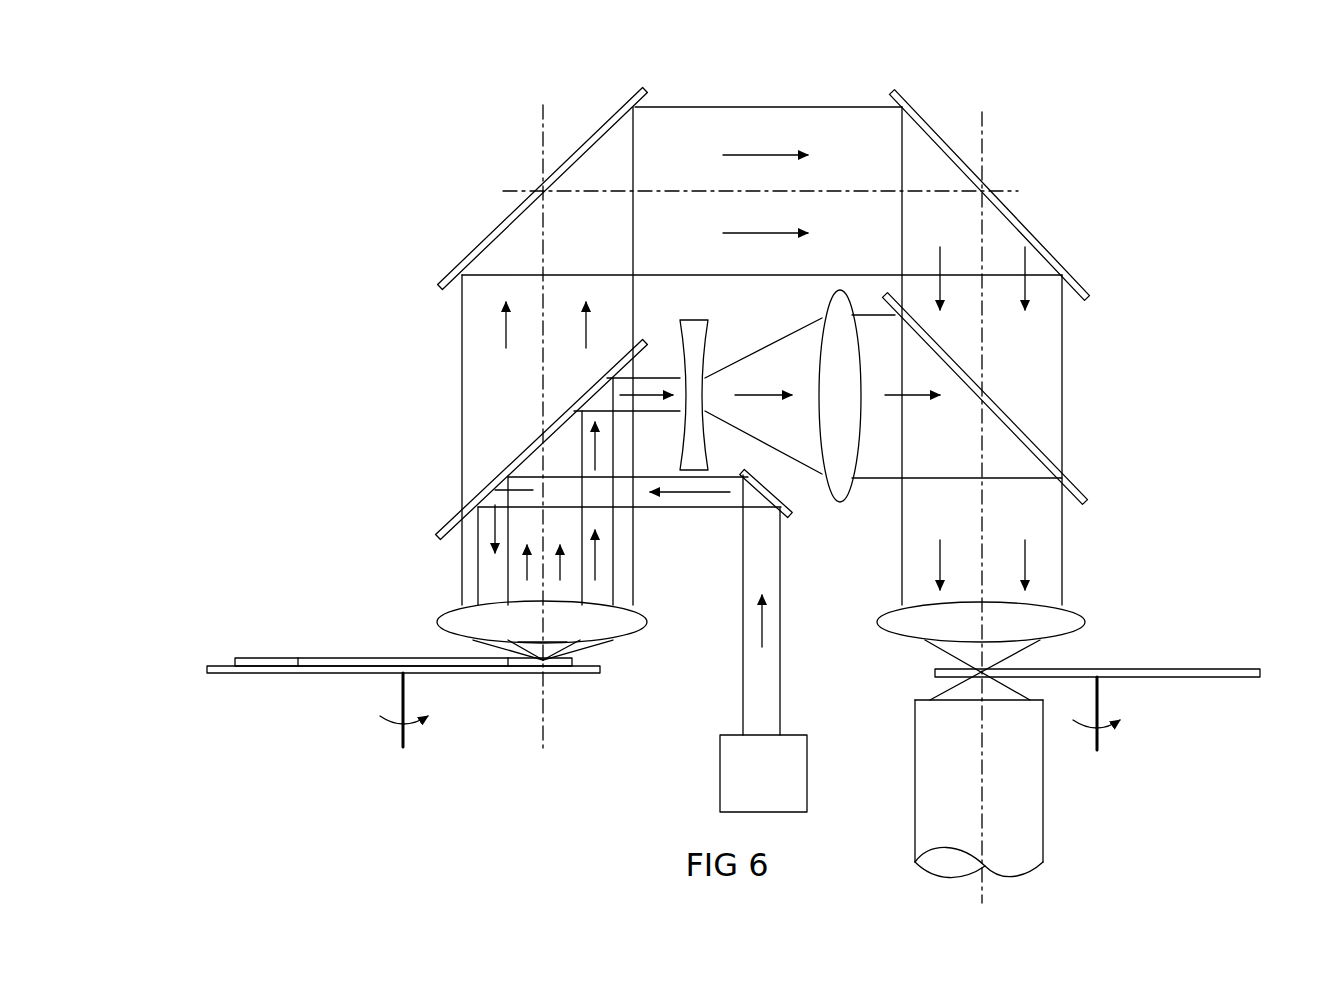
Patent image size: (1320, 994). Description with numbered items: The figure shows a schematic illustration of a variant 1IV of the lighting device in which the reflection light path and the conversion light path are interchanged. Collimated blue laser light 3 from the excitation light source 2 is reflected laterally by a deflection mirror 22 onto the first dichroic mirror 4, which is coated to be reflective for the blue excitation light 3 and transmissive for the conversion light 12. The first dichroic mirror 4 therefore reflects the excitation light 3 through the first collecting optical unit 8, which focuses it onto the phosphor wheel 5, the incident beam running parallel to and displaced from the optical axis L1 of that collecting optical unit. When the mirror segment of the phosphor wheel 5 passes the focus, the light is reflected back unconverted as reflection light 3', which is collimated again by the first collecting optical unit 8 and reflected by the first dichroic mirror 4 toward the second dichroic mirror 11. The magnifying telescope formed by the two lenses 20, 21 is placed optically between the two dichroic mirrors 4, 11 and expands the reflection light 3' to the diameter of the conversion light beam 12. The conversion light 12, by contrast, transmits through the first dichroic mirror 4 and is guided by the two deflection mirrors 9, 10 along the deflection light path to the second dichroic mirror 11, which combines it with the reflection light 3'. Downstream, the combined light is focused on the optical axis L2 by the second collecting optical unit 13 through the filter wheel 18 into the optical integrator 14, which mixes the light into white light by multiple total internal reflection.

The lighting device variant 1IV is at (1122, 120).
The excitation light source 2 is at (720, 778).
The blue laser light 3 is at (802, 605).
The reflection light 3' is at (841, 507).
The first dichroic mirror 4 is at (442, 523).
The phosphor wheel 5 is at (200, 670).
The first collecting optical unit 8 is at (650, 623).
The first deflection mirror 9 is at (447, 278).
The second deflection mirror 10 is at (1078, 279).
The second dichroic mirror 11 is at (1080, 490).
The conversion light 12 is at (787, 137).
The second collecting optical unit 13 is at (1085, 623).
The optical integrator 14 is at (1010, 808).
The filter wheel 18 is at (1235, 668).
The first telescope lens 20 is at (691, 320).
The second telescope lens 21 is at (840, 505).
The deflection mirror 22 is at (792, 515).
The optical axis of first collecting optical unit L1 is at (543, 130).
The optical axis of second collecting optical unit L2 is at (985, 120).